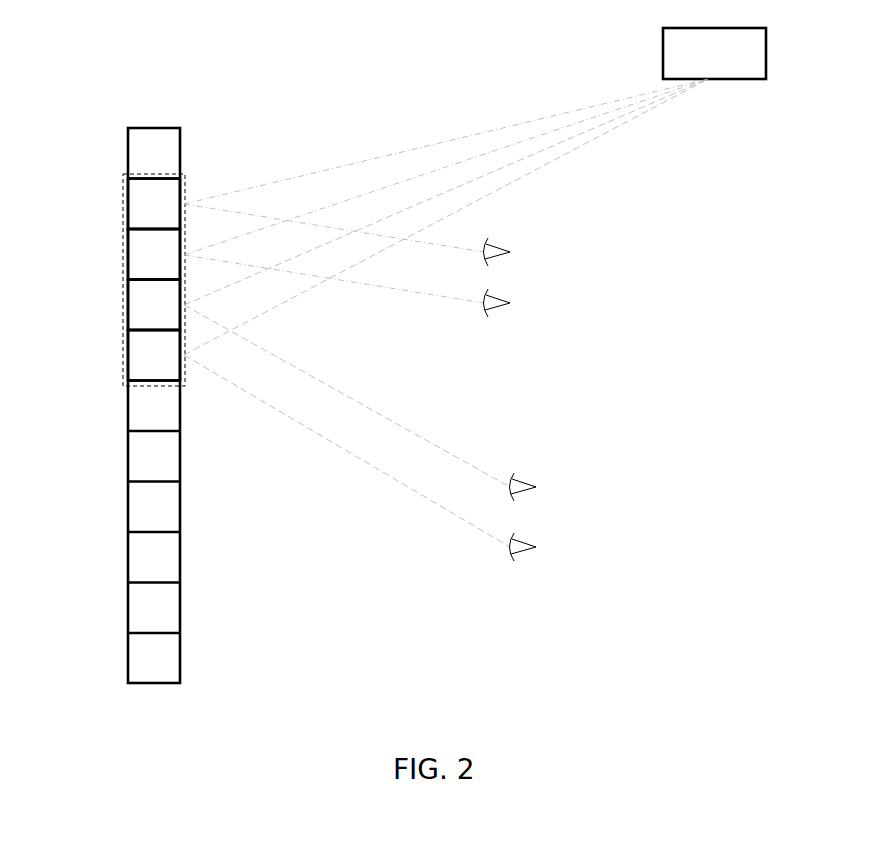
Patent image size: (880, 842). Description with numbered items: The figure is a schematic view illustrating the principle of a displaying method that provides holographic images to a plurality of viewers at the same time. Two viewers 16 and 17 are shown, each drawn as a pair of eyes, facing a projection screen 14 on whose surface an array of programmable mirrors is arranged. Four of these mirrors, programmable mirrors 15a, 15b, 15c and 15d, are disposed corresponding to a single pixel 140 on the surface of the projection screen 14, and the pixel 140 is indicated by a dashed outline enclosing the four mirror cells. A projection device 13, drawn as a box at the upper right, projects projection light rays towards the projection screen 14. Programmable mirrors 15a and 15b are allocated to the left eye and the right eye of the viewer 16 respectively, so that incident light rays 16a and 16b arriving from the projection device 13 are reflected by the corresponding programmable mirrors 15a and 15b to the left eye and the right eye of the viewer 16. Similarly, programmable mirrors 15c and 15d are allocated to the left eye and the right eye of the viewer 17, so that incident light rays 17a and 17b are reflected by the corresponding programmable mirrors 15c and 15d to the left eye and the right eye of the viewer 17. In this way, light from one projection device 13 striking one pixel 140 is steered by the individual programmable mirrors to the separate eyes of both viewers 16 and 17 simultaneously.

The projection device 13 is at (766, 46).
The projection screen 14 is at (153, 128).
The pixel 140 is at (153, 172).
The programmable mirror 15a is at (153, 208).
The programmable mirror 15b is at (147, 265).
The programmable mirror 15c is at (150, 312).
The programmable mirror 15d is at (142, 367).
The viewer 16 is at (512, 275).
The incident light ray 16a is at (373, 158).
The incident light ray 16b is at (353, 198).
The viewer 17 is at (545, 494).
The incident light ray 17a is at (522, 162).
The incident light ray 17b is at (478, 200).